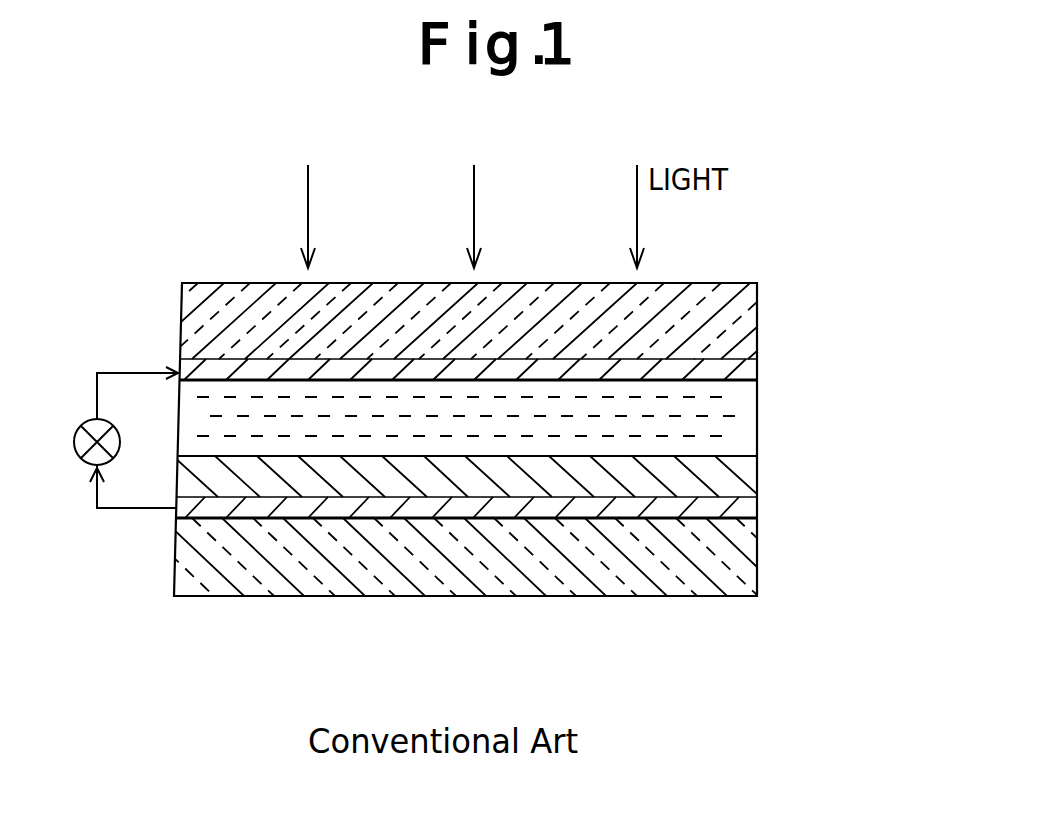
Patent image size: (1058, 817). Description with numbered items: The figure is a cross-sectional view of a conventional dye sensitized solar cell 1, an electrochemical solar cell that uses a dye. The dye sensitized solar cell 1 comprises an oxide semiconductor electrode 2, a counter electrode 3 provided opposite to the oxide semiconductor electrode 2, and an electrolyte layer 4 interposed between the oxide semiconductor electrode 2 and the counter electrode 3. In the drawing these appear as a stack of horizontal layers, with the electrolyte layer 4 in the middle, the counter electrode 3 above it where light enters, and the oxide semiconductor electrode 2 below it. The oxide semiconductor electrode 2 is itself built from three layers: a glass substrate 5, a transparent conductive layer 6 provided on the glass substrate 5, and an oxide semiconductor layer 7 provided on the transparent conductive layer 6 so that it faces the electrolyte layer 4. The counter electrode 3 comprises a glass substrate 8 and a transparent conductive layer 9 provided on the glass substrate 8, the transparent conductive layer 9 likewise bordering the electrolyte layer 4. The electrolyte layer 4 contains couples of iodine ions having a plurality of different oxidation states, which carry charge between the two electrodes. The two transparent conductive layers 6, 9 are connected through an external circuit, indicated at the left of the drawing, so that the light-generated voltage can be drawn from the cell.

The dye sensitized solar cell 1 is at (778, 243).
The oxide semiconductor electrode 2 is at (862, 453).
The counter electrode 3 is at (866, 282).
The electrolyte layer 4 is at (748, 418).
The glass substrate 5 is at (747, 570).
The transparent conductive layer 6 is at (747, 503).
The oxide semiconductor layer 7 is at (747, 470).
The glass substrate 8 is at (747, 326).
The transparent conductive layer 9 is at (747, 368).